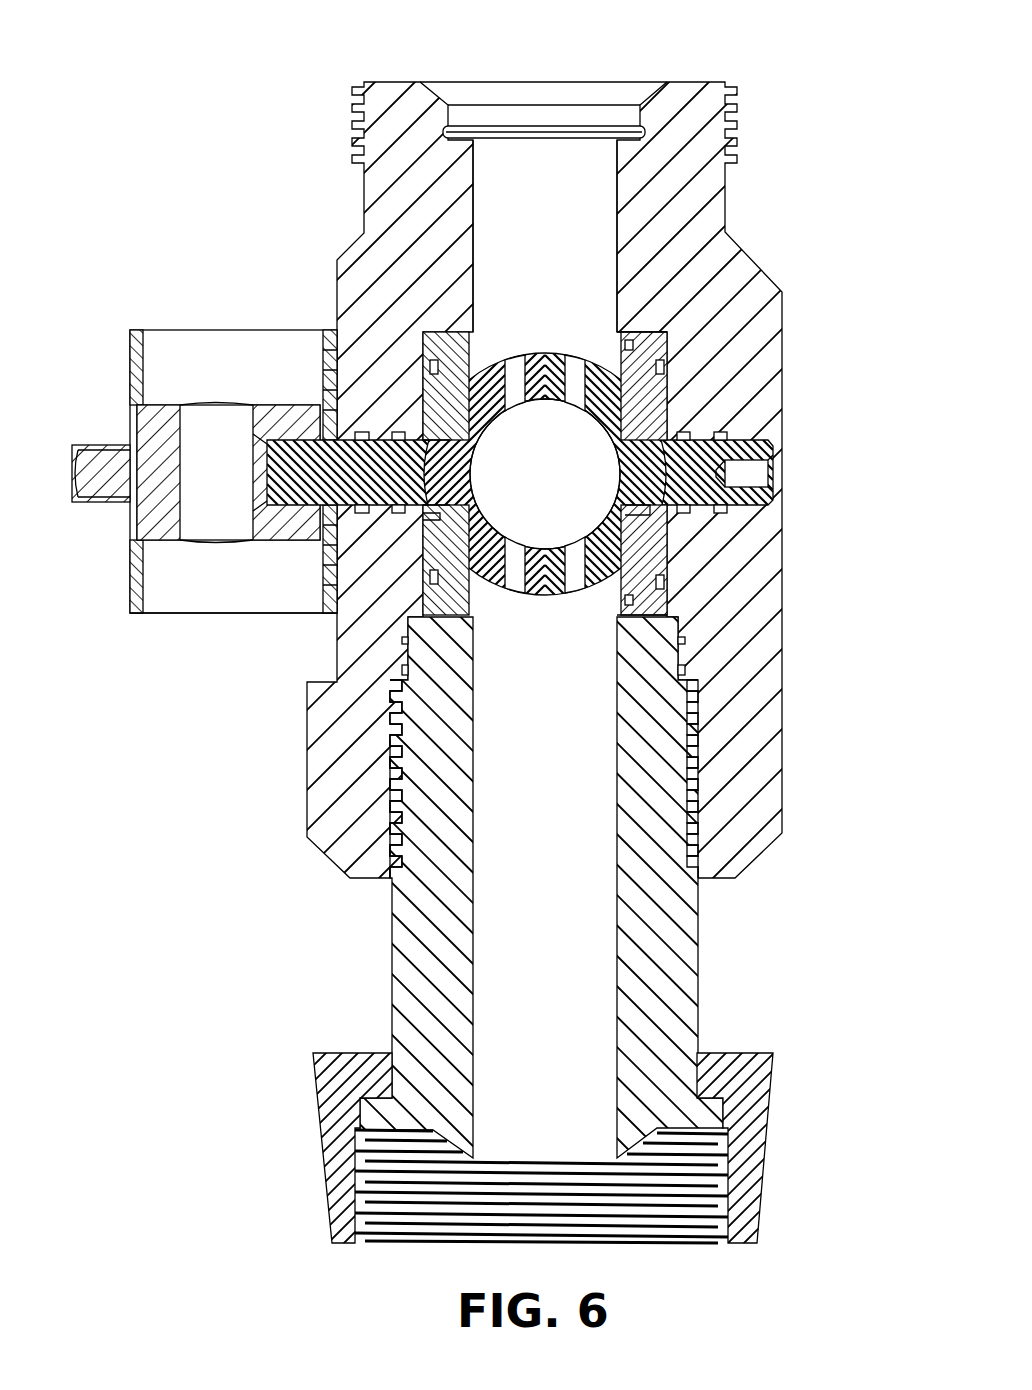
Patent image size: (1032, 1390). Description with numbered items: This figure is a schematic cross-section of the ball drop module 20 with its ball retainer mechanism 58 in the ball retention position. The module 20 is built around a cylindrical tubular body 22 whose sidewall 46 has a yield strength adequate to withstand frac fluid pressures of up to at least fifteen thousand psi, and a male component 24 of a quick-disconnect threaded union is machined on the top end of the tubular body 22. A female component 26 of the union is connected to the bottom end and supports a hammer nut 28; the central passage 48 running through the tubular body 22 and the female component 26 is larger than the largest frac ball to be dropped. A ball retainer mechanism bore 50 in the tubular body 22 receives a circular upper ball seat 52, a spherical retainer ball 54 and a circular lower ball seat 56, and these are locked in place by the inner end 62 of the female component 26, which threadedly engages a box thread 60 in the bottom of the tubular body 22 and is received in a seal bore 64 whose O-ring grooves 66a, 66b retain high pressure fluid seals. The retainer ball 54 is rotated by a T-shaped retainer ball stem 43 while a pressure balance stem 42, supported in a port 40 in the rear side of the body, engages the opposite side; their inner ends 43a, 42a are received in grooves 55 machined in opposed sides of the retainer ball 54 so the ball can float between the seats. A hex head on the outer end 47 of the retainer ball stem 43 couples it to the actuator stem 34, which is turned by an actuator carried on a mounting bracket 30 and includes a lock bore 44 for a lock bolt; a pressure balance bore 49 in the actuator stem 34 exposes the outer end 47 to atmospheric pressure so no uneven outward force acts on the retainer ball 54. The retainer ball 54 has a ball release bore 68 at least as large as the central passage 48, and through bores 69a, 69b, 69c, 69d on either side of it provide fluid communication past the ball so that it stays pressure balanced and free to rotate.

The ball drop module 20 is at (783, 104).
The tubular body 22 is at (733, 230).
The male component 24 is at (693, 84).
The female component 26 is at (717, 981).
The hammer nut 28 is at (775, 1102).
The mounting bracket 30 is at (132, 565).
The actuator stem 34 is at (93, 467).
The port 40 is at (752, 475).
The pressure balance stem 42 is at (780, 450).
The inner end of the pressure balance stem 42a is at (636, 512).
The retainer ball stem 43 is at (440, 580).
The inner end of the retainer ball stem 43a is at (437, 433).
The lock bore 44 is at (217, 423).
The sidewall 46 is at (730, 558).
The outer end of the retainer ball stem 47 is at (263, 461).
The central passage 48 is at (568, 194).
The pressure balance bore 49 is at (143, 582).
The ball retainer mechanism bore 50 is at (660, 345).
The upper ball seat 52 is at (640, 410).
The retainer ball 54 is at (655, 360).
The grooves 55 is at (448, 408).
The lower ball seat 56 is at (437, 562).
The ball retainer mechanism 58 is at (665, 590).
The box thread 60 is at (703, 810).
The inner end of the female component 62 is at (388, 725).
The seal bore 64 is at (612, 618).
The O-ring groove 66a is at (405, 640).
The O-ring groove 66b is at (403, 672).
The ball release bore 68 is at (580, 460).
The through bore 69a is at (513, 372).
The through bore 69b is at (467, 380).
The through bore 69c is at (520, 598).
The through bore 69d is at (578, 598).